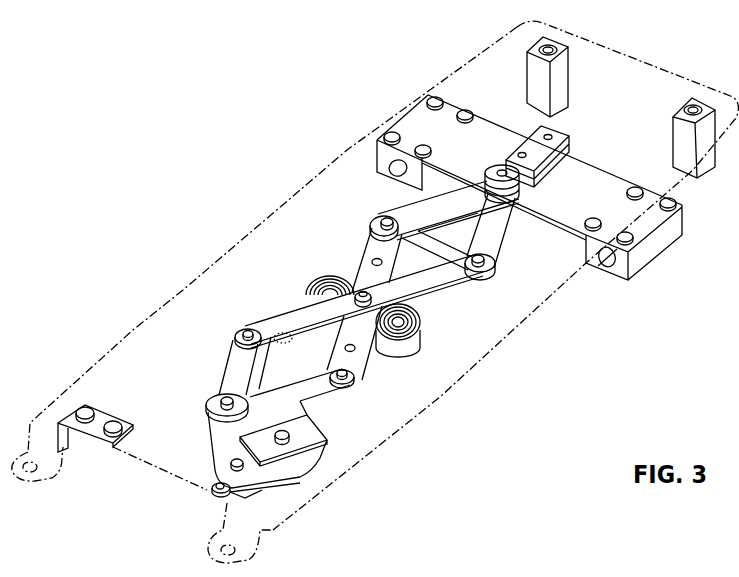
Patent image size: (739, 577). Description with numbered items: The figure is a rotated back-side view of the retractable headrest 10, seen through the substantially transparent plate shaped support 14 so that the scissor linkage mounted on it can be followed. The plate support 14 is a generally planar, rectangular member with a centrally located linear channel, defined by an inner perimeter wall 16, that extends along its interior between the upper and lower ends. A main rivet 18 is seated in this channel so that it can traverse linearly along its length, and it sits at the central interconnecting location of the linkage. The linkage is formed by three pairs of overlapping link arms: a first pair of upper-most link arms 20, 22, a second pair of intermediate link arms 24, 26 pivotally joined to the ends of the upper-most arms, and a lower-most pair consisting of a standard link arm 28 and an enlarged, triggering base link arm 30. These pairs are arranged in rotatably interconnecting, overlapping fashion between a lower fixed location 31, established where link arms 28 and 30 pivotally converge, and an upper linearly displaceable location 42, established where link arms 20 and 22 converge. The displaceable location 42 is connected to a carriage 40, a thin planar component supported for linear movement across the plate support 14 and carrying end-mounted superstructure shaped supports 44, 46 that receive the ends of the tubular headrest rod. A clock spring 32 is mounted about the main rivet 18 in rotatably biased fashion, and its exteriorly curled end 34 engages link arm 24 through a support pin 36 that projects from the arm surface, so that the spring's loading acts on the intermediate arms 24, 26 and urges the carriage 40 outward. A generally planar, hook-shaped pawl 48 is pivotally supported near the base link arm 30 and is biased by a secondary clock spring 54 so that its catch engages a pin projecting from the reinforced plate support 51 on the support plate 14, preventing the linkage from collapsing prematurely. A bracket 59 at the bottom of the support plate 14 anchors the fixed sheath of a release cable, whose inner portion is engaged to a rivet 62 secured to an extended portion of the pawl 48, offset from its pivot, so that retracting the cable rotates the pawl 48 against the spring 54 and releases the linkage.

The retractable headrest 10 is at (467, 416).
The plate shaped support 14 is at (166, 381).
The channel inner perimeter wall 16 is at (417, 258).
The main rivet 18 is at (347, 292).
The upper-most link arm 20 is at (407, 212).
The upper-most link arm 22 is at (497, 238).
The intermediate link arm 24 is at (370, 350).
The intermediate link arm 26 is at (420, 288).
The standard link arm 28 is at (233, 378).
The triggering base link arm 30 is at (305, 392).
The lower most fixed location 31 is at (218, 420).
The clock spring 32 is at (410, 323).
The exteriorly curled end 34 is at (257, 326).
The support pin 36 is at (275, 330).
The carriage 40 is at (598, 172).
The upper linearly displaceable location 42 is at (494, 168).
The superstructure shaped support 44 is at (636, 264).
The superstructure shaped support 46 is at (368, 158).
The pawl 48 is at (300, 480).
The plate support 51 is at (327, 437).
The secondary clock spring 54 is at (240, 497).
The bracket 59 is at (105, 413).
The rivet 62 is at (215, 495).